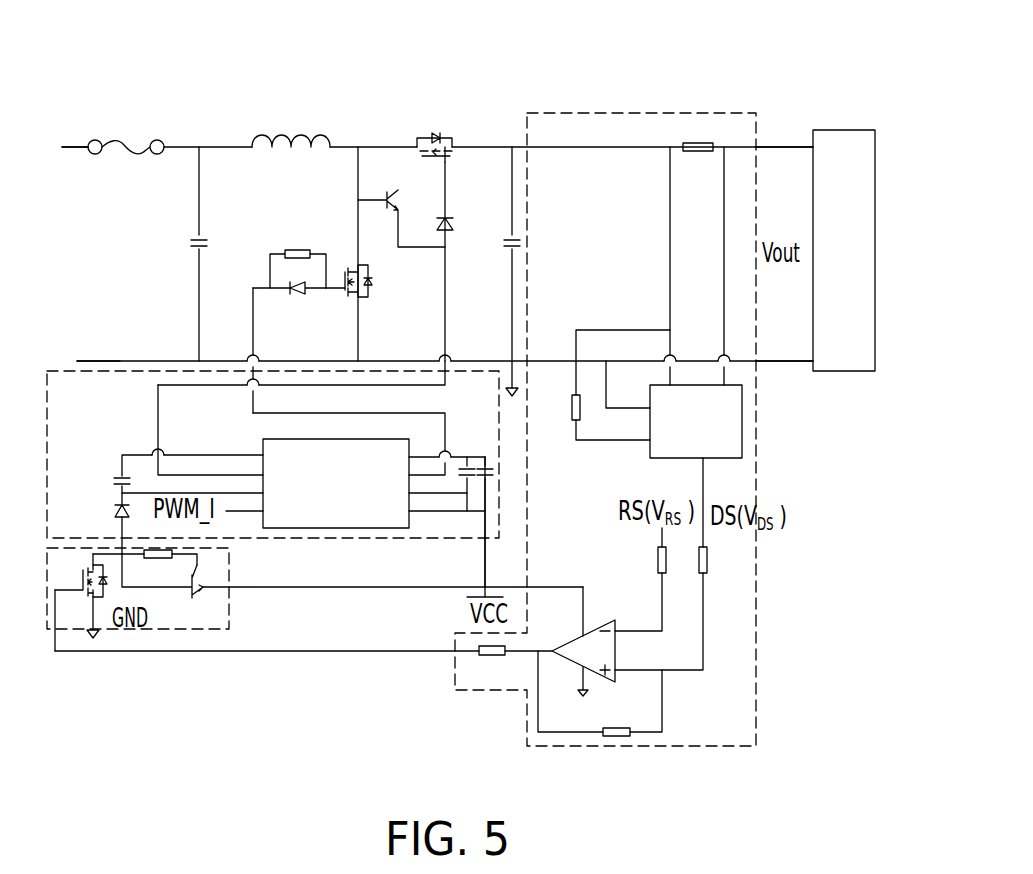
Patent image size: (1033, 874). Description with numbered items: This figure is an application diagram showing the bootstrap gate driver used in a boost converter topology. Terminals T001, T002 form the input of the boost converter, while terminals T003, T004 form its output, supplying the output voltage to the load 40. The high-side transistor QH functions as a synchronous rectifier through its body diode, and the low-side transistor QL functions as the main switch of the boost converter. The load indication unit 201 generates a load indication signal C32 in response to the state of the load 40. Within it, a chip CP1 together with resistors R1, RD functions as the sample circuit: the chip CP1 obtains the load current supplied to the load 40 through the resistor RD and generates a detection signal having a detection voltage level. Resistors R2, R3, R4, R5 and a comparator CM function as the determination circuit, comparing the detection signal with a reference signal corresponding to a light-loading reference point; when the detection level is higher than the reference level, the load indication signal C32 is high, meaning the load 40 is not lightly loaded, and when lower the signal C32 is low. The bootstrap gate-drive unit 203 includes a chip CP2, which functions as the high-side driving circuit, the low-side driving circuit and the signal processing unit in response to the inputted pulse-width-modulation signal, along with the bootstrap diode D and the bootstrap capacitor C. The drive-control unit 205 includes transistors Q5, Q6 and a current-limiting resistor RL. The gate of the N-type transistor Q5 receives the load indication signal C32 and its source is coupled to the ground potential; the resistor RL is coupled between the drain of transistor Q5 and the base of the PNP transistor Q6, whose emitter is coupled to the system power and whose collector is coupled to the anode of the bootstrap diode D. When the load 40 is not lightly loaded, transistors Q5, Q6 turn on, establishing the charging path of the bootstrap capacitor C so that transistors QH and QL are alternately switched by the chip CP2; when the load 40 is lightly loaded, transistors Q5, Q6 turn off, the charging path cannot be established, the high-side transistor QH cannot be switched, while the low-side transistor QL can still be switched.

The load indication unit 201 is at (554, 110).
The bootstrap gate-drive unit 203 is at (140, 370).
The drive-control unit 205 is at (163, 632).
The load 40 is at (846, 128).
The terminal T001 is at (82, 145).
The terminal T002 is at (90, 358).
The terminal T003 is at (780, 146).
The terminal T004 is at (776, 359).
The chip CP1 is at (662, 460).
The chip CP2 is at (264, 440).
The comparator CM is at (596, 620).
The high-side transistor QH is at (434, 131).
The low-side transistor QL is at (365, 283).
The resistor RD is at (698, 132).
The resistor R1 is at (607, 385).
The resistor R2 is at (640, 579).
The resistor R3 is at (675, 564).
The resistor R4 is at (600, 693).
The resistor R5 is at (515, 667).
The current-limiting resistor RL is at (145, 569).
The transistor Q5 is at (80, 596).
The transistor Q6 is at (164, 587).
The bootstrap capacitor C is at (180, 471).
The bootstrap diode D is at (113, 523).
The load indication signal C32 is at (267, 633).